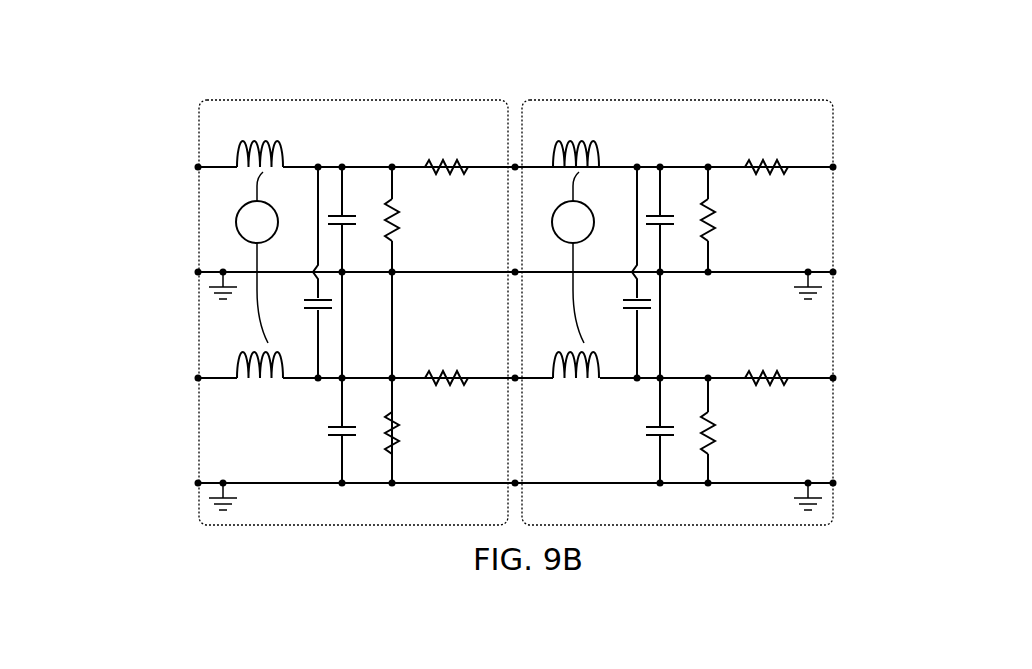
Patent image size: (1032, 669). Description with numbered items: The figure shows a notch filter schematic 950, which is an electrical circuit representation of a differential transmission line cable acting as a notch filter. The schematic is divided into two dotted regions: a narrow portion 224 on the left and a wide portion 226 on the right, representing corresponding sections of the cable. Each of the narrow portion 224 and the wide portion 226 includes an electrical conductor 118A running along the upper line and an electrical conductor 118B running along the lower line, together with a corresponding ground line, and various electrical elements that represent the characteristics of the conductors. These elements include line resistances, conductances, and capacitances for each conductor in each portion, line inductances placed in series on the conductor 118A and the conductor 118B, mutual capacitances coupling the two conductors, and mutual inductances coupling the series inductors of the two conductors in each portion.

The notch filter schematic 950 is at (174, 66).
The narrow portion 224 is at (262, 97).
The wide portion 226 is at (595, 97).
The electrical conductor 118A is at (183, 135).
The electrical conductor 118B is at (183, 345).